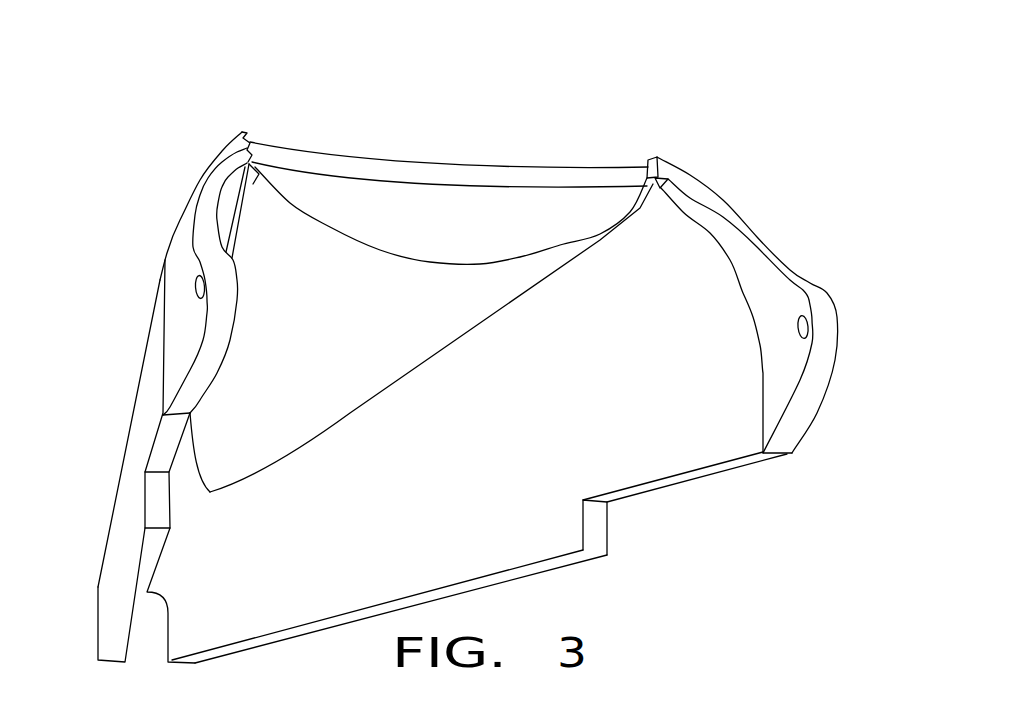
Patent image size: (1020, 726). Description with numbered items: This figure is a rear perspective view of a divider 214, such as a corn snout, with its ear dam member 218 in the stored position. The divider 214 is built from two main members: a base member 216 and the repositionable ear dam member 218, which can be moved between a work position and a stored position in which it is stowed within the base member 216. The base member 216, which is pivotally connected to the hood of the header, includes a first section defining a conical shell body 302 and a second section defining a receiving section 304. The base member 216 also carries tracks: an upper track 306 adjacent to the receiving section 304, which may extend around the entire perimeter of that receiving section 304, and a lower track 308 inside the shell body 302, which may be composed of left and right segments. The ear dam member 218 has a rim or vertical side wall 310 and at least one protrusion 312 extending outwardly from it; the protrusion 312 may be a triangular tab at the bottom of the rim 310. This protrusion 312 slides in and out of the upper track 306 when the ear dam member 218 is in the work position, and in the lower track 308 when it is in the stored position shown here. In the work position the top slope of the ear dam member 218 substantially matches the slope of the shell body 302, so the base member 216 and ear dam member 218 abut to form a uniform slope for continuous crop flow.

The shell body 302 is at (691, 445).
The receiving section 304 is at (526, 157).
The upper track 306 is at (638, 159).
The lower track 308 is at (658, 198).
The rim 310 is at (223, 242).
The protrusion 312 is at (235, 185).
The divider 214 is at (786, 215).
The base member 216 is at (815, 398).
The ear dam member 218 is at (263, 217).